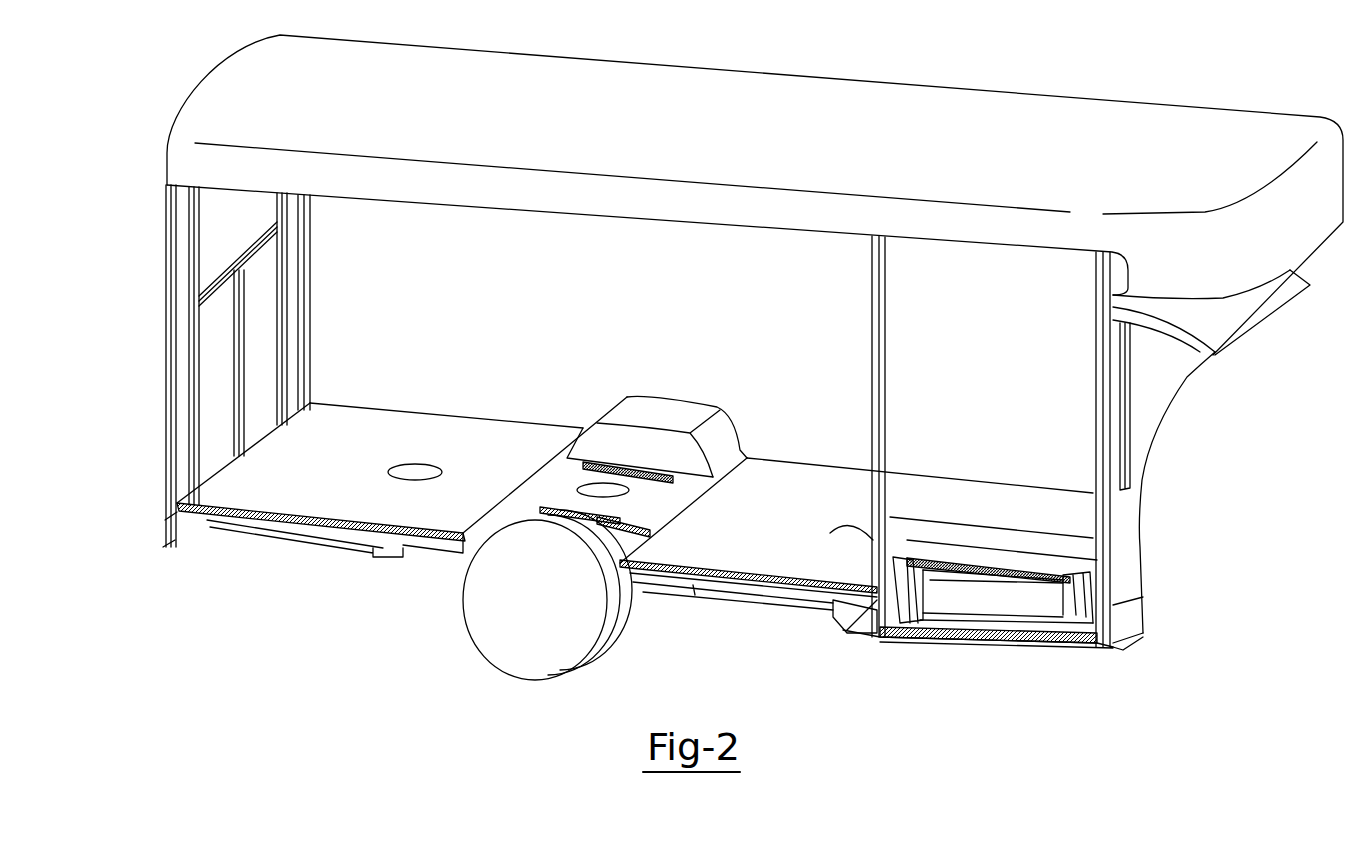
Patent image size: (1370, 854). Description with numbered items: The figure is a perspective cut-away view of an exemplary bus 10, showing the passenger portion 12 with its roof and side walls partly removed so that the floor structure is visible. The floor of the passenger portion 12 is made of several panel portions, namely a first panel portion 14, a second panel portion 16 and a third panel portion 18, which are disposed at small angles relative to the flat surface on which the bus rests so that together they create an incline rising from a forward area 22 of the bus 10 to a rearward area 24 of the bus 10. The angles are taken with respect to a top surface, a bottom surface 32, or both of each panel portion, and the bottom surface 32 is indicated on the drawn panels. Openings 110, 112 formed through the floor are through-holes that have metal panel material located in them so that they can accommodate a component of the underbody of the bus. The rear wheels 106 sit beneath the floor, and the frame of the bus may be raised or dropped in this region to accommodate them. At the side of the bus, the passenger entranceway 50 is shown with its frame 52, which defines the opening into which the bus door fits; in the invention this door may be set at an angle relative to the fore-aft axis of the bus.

The bus 10 is at (1225, 84).
The passenger portion 12 is at (981, 112).
The first panel portion 14 is at (807, 480).
The second panel portion 16 is at (647, 503).
The third panel portion 18 is at (475, 450).
The forward area 22 is at (983, 478).
The rearward area 24 is at (317, 417).
The bottom surface 32 is at (555, 471).
The passenger entranceway 50 is at (1005, 652).
The frame 52 is at (866, 565).
The rear wheels 106 is at (476, 642).
The opening 110 is at (404, 463).
The opening 112 is at (591, 486).